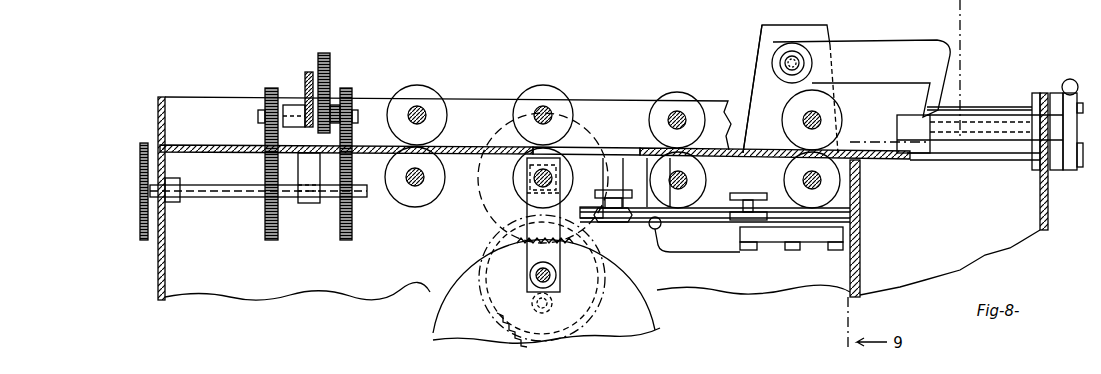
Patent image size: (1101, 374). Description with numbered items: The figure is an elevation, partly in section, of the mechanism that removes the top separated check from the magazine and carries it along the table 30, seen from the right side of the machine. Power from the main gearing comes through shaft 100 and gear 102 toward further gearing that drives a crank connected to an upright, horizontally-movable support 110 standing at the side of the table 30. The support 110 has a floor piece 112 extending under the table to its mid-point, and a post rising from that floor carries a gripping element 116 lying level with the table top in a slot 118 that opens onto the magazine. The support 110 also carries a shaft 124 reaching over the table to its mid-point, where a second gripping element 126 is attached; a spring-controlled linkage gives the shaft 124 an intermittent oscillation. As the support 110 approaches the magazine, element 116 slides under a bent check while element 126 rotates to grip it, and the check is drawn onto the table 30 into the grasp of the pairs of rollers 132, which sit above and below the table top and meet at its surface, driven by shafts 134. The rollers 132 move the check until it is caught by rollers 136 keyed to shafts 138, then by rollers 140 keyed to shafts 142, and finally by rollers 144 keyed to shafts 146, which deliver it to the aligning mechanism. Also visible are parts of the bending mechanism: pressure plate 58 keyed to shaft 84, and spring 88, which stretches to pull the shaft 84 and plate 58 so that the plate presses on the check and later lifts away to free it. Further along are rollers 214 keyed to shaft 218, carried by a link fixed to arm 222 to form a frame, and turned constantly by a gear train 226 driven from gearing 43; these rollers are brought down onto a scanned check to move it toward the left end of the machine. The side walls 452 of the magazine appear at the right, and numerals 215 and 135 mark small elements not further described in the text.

The table 30 is at (600, 144).
The gearing 43 is at (140, 191).
The pressure plate 58 is at (965, 147).
The shaft 84 is at (987, 122).
The spring 88 is at (1066, 82).
The shaft 100 is at (553, 277).
The gear 102 is at (524, 327).
The support 110 is at (780, 33).
The floor piece 112 is at (768, 233).
The gripping element 116 is at (755, 150).
The slot 118 is at (583, 150).
The shaft 124 is at (810, 67).
The gripping element 126 is at (943, 72).
The rollers 132 is at (788, 110).
The shafts 134 is at (825, 117).
The pin 135 is at (550, 306).
The rollers 136 is at (663, 101).
The shafts 138 is at (680, 113).
The rollers 140 is at (556, 97).
The shafts 142 is at (541, 108).
The rollers 144 is at (418, 93).
The shafts 146 is at (425, 110).
The rollers 214 is at (270, 88).
The hub 215 is at (340, 233).
The shaft 218 is at (258, 117).
The arm 222 is at (305, 80).
The gear train 226 is at (325, 56).
The side walls 452 is at (1040, 217).